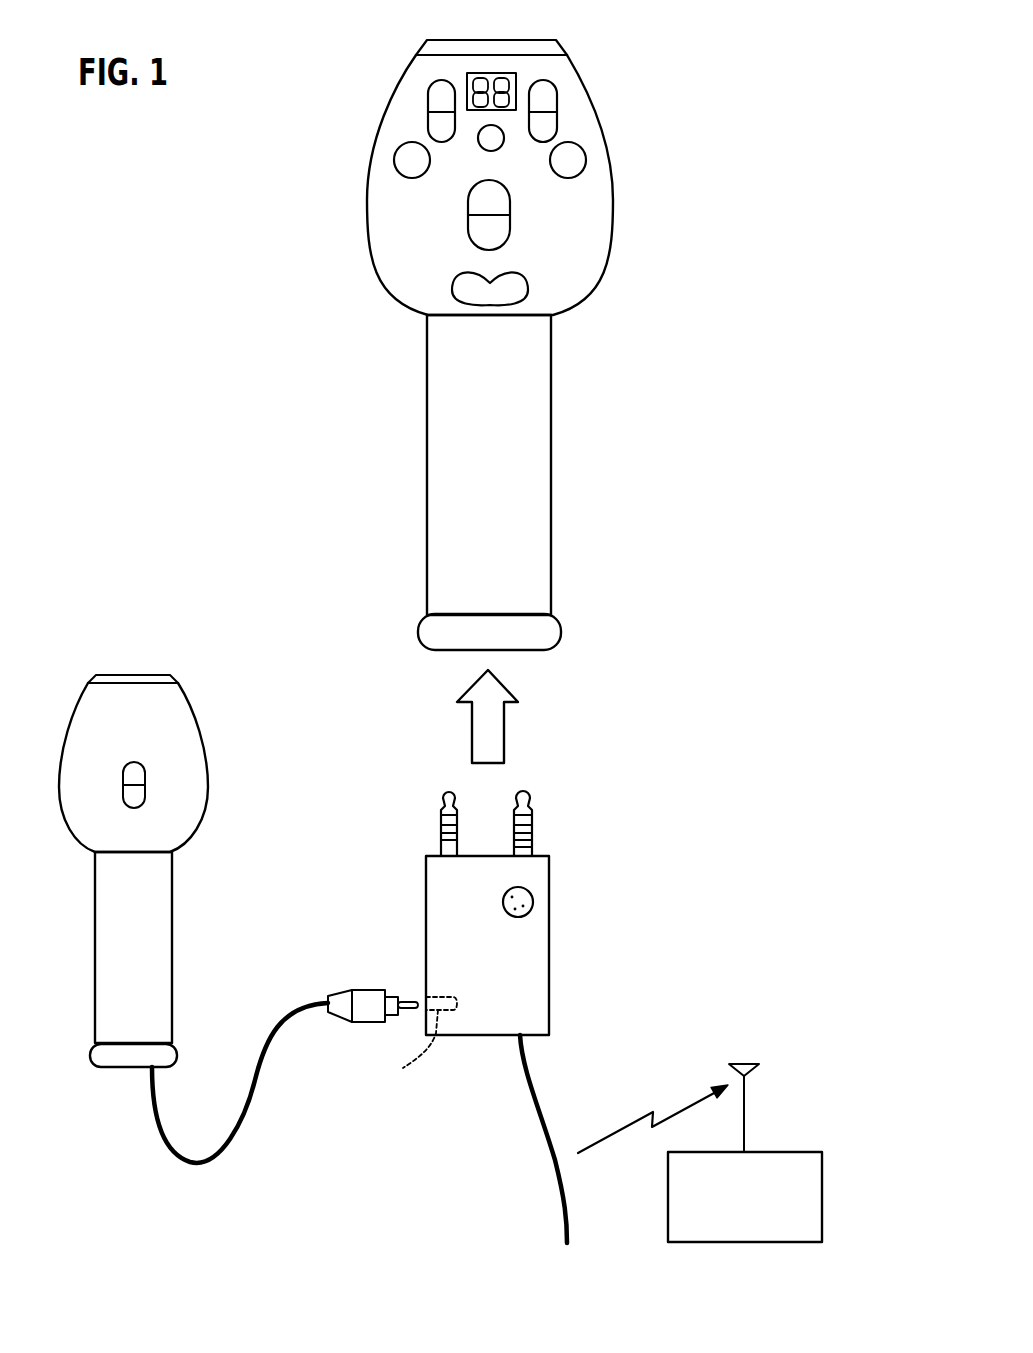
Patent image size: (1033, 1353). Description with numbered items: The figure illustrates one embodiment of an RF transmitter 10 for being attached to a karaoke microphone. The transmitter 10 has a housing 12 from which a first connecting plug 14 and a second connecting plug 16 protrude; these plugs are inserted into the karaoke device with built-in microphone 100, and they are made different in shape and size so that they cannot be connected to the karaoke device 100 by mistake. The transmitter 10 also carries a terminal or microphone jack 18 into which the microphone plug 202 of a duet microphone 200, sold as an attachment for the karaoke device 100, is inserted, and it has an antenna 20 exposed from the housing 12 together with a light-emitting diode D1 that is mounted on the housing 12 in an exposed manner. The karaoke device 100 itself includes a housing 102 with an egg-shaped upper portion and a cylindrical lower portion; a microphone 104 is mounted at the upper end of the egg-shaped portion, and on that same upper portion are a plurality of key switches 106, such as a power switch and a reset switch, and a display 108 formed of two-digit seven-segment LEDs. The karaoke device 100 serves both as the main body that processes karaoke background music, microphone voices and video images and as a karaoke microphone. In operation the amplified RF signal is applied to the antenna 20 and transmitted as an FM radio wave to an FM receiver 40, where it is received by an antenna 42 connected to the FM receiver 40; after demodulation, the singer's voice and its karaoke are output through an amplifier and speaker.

The RF transmitter 10 is at (468, 928).
The housing 12 is at (550, 950).
The first connecting plug 14 is at (440, 823).
The second connecting plug 16 is at (533, 821).
The terminal (microphone jack) 18 is at (428, 1044).
The antenna 20 is at (538, 1107).
The FM receiver 40 is at (773, 1151).
The antenna 42 is at (739, 1062).
The light-emitting diode D1 is at (531, 897).
The karaoke device with built-in microphone 100 is at (515, 329).
The housing 102 is at (543, 373).
The microphone 104 is at (427, 56).
The key switches 106 is at (560, 232).
The display 108 is at (516, 74).
The duet microphone 200 is at (222, 720).
The microphone plug 202 is at (380, 988).